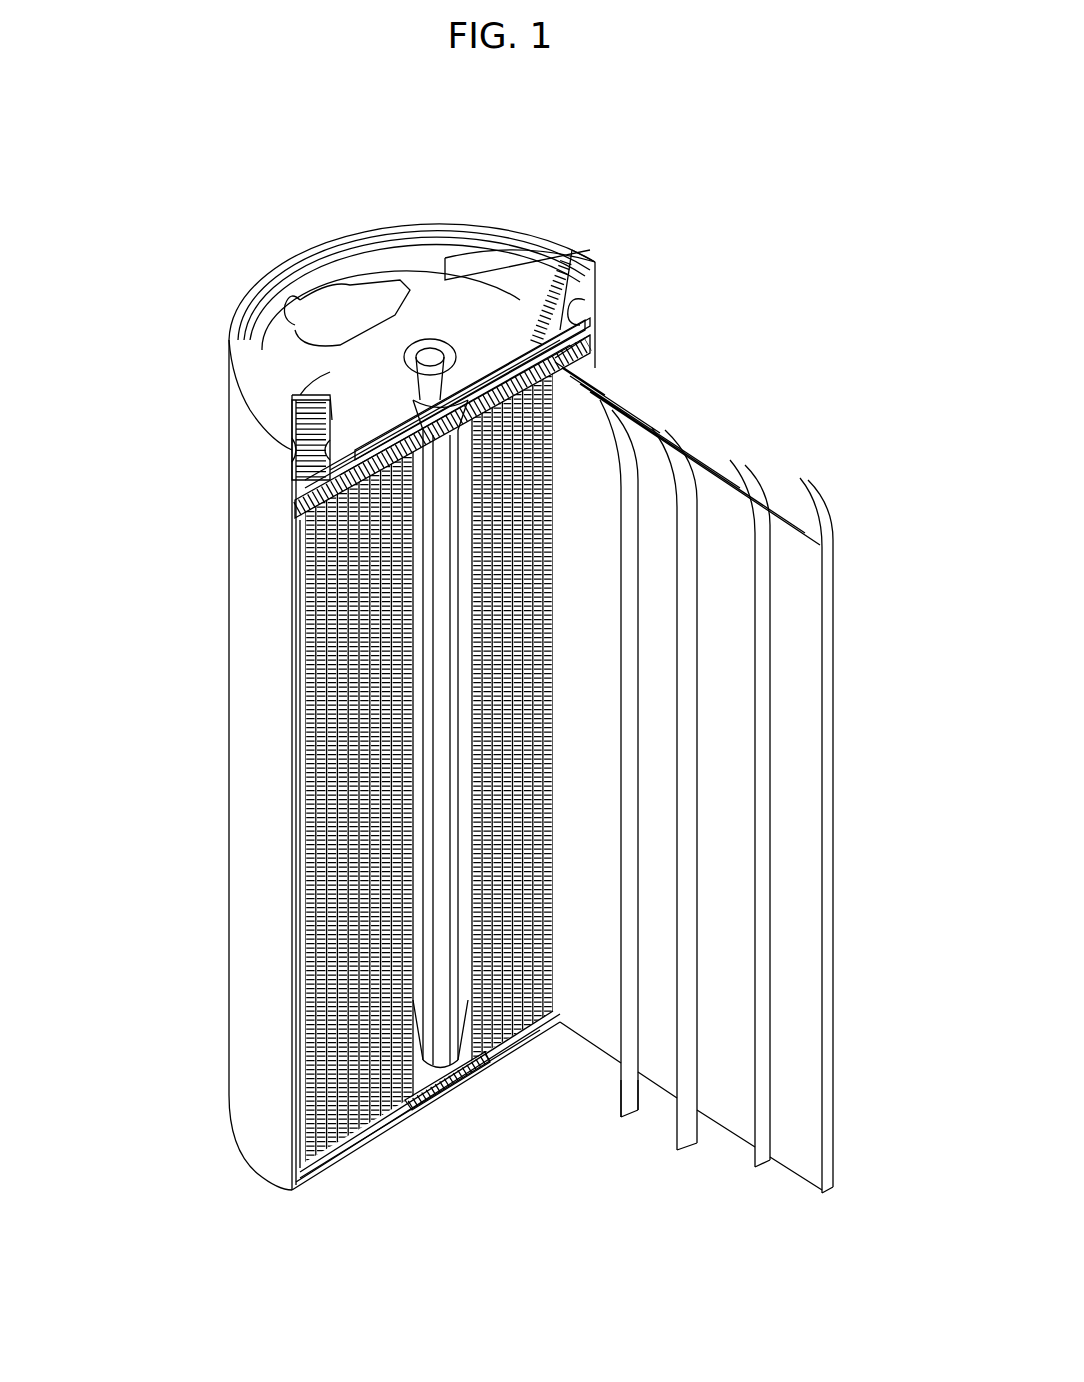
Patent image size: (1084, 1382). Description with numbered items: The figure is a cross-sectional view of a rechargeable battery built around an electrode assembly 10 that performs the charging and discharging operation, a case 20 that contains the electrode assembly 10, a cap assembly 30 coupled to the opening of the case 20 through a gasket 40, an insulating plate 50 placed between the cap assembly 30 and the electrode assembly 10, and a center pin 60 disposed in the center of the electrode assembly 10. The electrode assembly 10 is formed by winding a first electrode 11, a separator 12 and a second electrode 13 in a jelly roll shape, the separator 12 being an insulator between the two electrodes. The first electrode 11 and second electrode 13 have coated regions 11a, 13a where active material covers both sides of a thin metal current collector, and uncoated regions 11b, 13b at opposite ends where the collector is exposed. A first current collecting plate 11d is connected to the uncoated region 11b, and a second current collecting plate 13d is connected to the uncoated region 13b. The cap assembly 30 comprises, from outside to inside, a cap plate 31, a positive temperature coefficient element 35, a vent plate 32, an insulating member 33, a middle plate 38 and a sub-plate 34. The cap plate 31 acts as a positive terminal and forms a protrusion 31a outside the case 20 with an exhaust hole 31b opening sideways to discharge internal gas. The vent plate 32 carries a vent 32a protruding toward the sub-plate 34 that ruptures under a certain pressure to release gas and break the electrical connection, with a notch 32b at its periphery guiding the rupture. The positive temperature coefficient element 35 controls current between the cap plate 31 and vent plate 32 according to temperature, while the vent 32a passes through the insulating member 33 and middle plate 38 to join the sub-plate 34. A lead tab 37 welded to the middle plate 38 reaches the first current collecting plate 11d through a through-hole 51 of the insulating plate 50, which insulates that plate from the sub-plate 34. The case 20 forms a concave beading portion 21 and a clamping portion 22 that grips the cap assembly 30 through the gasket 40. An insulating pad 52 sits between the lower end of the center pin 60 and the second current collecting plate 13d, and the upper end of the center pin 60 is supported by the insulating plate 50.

The electrode assembly 10 is at (322, 888).
The first electrode 11 is at (728, 392).
The coated region 11a is at (770, 530).
The uncoated region 11b is at (730, 480).
The first current collecting plate 11d is at (300, 515).
The separator 12 is at (820, 520).
The second electrode 13 is at (650, 1193).
The coated region 13a is at (615, 1075).
The uncoated region 13b is at (636, 1112).
The second current collecting plate 13d is at (365, 1133).
The case 20 is at (235, 700).
The beading portion 21 is at (300, 465).
The clamping portion 22 is at (283, 440).
The cap assembly 30 is at (272, 338).
The cap plate 31 is at (487, 257).
The protrusion 31a is at (370, 272).
The exhaust hole 31b is at (300, 300).
The vent plate 32 is at (540, 300).
The vent 32a is at (430, 340).
The notch 32b is at (457, 340).
The insulating member 33 is at (520, 290).
The sub-plate 34 is at (575, 325).
The positive temperature coefficient element 35 is at (588, 270).
The lead tab 37 is at (565, 423).
The middle plate 38 is at (582, 304).
The gasket 40 is at (596, 283).
The insulating plate 50 is at (292, 502).
The through-hole 51 is at (300, 395).
The insulating pad 52 is at (450, 1092).
The center pin 60 is at (433, 940).